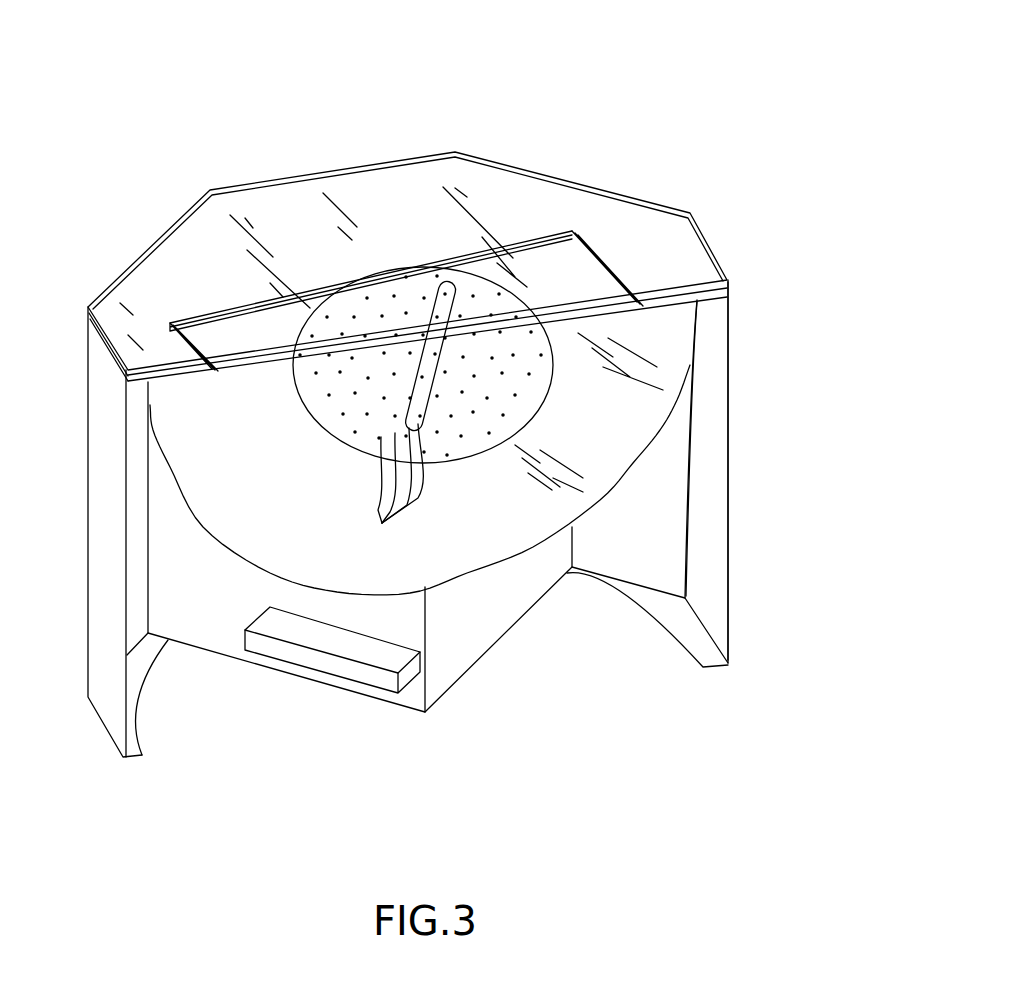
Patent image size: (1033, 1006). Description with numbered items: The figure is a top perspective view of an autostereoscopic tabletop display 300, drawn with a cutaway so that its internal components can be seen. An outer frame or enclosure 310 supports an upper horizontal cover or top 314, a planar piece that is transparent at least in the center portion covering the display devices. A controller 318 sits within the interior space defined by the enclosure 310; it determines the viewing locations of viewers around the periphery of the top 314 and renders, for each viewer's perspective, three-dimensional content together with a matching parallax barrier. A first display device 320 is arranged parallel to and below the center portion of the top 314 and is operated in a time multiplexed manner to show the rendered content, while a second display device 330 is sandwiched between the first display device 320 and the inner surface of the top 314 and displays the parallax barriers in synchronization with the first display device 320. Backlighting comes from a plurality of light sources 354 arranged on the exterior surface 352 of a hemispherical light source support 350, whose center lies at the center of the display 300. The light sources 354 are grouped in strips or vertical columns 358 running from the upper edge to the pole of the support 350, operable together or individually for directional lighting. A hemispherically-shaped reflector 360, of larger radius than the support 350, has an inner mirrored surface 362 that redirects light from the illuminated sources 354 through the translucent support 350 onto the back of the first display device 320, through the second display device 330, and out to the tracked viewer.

The autostereoscopic tabletop display 300 is at (708, 118).
The outer frame or enclosure 310 is at (738, 578).
The upper horizontal cover or top 314 is at (130, 267).
The controller 318 is at (272, 661).
The first display device 320 is at (633, 317).
The second display device 330 is at (572, 231).
The hemispherical light source support 350 is at (290, 455).
The exterior surface 352 is at (341, 438).
The light sources 354 is at (390, 491).
The strips or vertical columns 358 is at (453, 291).
The hemispherically-shaped reflector 360 is at (537, 556).
The inner mirrored surface 362 is at (593, 487).